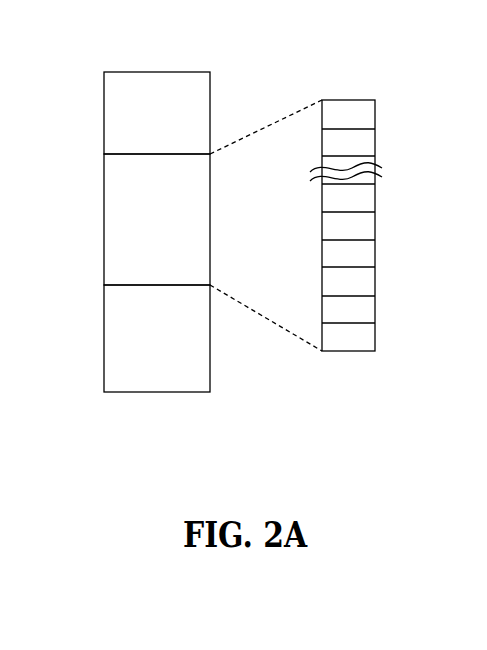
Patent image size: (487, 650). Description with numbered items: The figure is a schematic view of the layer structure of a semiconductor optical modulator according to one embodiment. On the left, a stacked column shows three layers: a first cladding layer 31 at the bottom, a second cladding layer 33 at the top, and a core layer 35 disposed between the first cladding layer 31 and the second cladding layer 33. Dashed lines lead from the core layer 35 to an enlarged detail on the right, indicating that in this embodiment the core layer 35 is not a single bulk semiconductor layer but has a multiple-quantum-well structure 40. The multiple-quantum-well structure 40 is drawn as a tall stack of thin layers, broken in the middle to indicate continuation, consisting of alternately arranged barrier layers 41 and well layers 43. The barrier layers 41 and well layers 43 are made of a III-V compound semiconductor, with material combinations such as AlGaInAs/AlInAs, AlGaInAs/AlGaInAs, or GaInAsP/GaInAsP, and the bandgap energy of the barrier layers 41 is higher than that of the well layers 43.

The first cladding layer 31 is at (104, 364).
The second cladding layer 33 is at (104, 93).
The core layer 35 is at (104, 197).
The multiple-quantum-well structure 40 is at (372, 238).
The barrier layers 41 is at (375, 107).
The well layers 43 is at (375, 143).